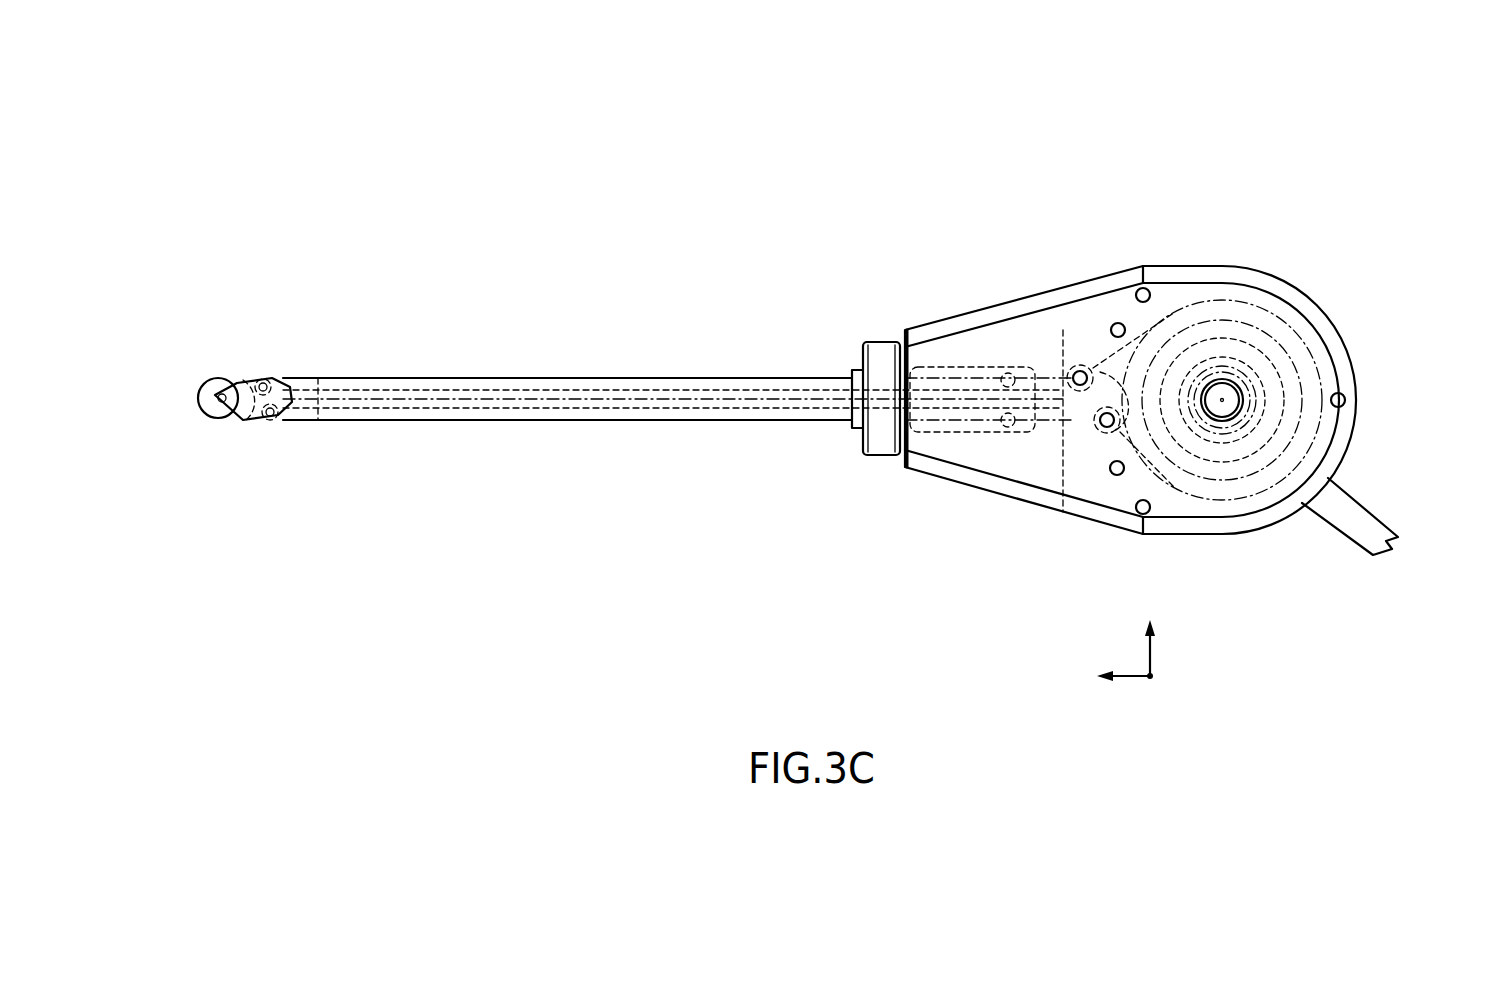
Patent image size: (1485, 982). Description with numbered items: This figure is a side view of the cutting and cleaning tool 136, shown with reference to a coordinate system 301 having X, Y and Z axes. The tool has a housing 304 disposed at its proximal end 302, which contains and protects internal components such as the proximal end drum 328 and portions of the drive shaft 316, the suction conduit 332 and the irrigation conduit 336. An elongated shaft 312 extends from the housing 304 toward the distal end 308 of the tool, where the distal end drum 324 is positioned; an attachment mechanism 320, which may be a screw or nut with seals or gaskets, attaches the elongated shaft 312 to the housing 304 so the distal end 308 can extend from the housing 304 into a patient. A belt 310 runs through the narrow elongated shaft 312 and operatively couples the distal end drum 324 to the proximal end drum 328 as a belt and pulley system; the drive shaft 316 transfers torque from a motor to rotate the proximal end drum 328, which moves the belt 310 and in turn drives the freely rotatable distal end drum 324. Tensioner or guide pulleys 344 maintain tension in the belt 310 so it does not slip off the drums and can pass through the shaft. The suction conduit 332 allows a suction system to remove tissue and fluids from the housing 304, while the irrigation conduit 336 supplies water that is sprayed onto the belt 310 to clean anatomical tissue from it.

The cutting and cleaning tool 136 is at (705, 188).
The coordinate system 301 is at (1155, 680).
The proximal end 302 is at (1370, 391).
The housing 304 is at (1237, 267).
The distal end 308 is at (191, 368).
The belt 310 is at (1115, 370).
The elongated shaft 312 is at (579, 358).
The drive shaft 316 is at (1222, 410).
The attachment mechanism 320 is at (862, 342).
The distal end drum 324 is at (221, 415).
The proximal end drum 328 is at (1295, 410).
The suction conduit 332 is at (1370, 545).
The irrigation conduit 336 is at (1200, 370).
The tensioner or guide pulleys 344 is at (258, 382).